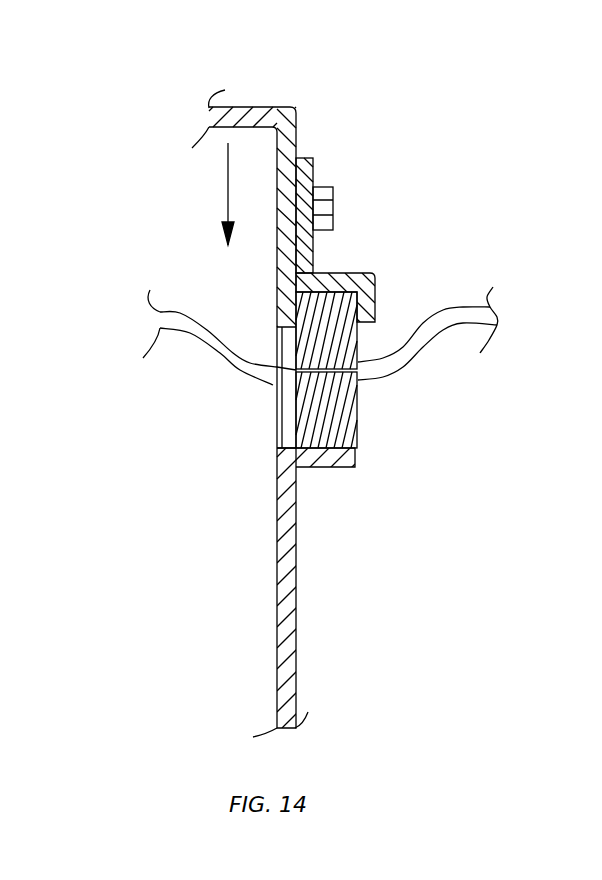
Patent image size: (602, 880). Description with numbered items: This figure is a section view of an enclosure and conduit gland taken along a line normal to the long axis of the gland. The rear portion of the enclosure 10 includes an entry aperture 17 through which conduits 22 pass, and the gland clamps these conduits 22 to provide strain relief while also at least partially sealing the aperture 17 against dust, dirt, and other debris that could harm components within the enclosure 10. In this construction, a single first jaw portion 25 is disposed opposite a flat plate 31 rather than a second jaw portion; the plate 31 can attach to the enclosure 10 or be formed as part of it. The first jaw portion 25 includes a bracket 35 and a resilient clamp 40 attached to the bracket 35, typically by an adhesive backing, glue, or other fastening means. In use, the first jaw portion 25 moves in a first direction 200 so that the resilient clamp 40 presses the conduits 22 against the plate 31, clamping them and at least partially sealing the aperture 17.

The enclosure 10 is at (297, 110).
The entry aperture 17 is at (292, 369).
The conduit 22 is at (467, 303).
The first jaw portion 25 is at (352, 243).
The flat plate 31 is at (345, 468).
The bracket 35 is at (315, 163).
The resilient clamp 40 is at (358, 340).
The first direction 200 is at (228, 178).